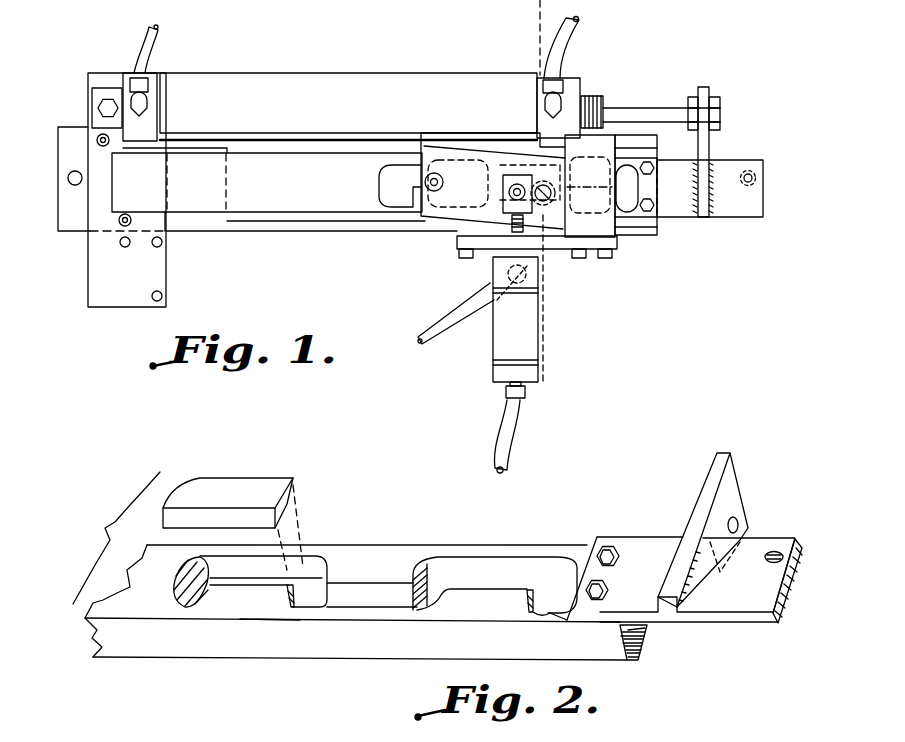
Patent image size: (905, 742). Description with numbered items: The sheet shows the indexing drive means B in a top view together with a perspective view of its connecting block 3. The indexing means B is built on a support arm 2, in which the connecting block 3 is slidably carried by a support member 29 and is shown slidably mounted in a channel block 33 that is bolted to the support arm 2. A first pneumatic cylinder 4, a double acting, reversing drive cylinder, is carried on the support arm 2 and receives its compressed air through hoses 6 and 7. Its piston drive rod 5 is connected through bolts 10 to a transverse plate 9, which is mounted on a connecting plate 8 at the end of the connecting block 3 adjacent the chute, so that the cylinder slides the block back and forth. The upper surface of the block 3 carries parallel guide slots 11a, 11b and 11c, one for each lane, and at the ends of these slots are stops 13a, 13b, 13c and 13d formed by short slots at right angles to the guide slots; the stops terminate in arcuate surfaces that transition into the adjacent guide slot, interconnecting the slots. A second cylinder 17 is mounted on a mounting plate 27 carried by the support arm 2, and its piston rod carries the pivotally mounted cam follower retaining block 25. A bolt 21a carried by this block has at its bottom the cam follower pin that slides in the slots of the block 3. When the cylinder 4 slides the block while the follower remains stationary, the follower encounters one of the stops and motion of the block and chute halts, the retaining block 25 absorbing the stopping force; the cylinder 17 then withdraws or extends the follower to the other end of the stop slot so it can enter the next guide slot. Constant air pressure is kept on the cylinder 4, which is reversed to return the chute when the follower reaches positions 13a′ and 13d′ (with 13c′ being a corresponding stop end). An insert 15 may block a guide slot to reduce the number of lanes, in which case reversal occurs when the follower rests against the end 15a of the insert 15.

In FIG. 1, the support arm 2 is at (203, 233).
In FIG. 1, the connecting block 3 is at (313, 212).
In FIG. 2, the connecting block 3 is at (385, 546).
In FIG. 1, the first pneumatic cylinder 4 is at (255, 73).
In FIG. 1, the piston drive rod 5 is at (655, 108).
In FIG. 1, the hose 6 is at (135, 45).
In FIG. 1, the hose 7 is at (567, 40).
In FIG. 1, the connecting plate 8 is at (737, 160).
In FIG. 2, the connecting plate 8 is at (745, 623).
In FIG. 1, the transverse plate 9 is at (692, 206).
In FIG. 2, the transverse plate 9 is at (733, 473).
In FIG. 1, the bolts 10 is at (712, 95).
In FIG. 2, the guide slot 11a is at (503, 557).
In FIG. 2, the guide slot 11b is at (326, 608).
In FIG. 1, the guide slot 11c is at (413, 193).
In FIG. 2, the guide slot 11c is at (245, 623).
In FIG. 2, the stop 13a is at (573, 603).
In FIG. 2, the cam follower position 13a′ is at (545, 618).
In FIG. 2, the stop 13b is at (437, 612).
In FIG. 2, the stop 13c is at (345, 546).
In FIG. 2, the wall portion 13c′ is at (289, 607).
In FIG. 2, the stop 13d is at (180, 604).
In FIG. 2, the wall portion 13d′ is at (225, 563).
In FIG. 2, the insert 15 is at (240, 478).
In FIG. 2, the end of insert 15a is at (290, 494).
In FIG. 1, the second cylinder 17 is at (492, 352).
In FIG. 1, the bolt 21a is at (548, 207).
In FIG. 1, the cam follower retaining block 25 is at (458, 223).
In FIG. 1, the mounting plate 27 is at (592, 258).
In FIG. 1, the support member 29 is at (86, 282).
In FIG. 1, the channel block 33 is at (273, 222).
In FIG. 1, the indexing drive means B is at (691, 268).